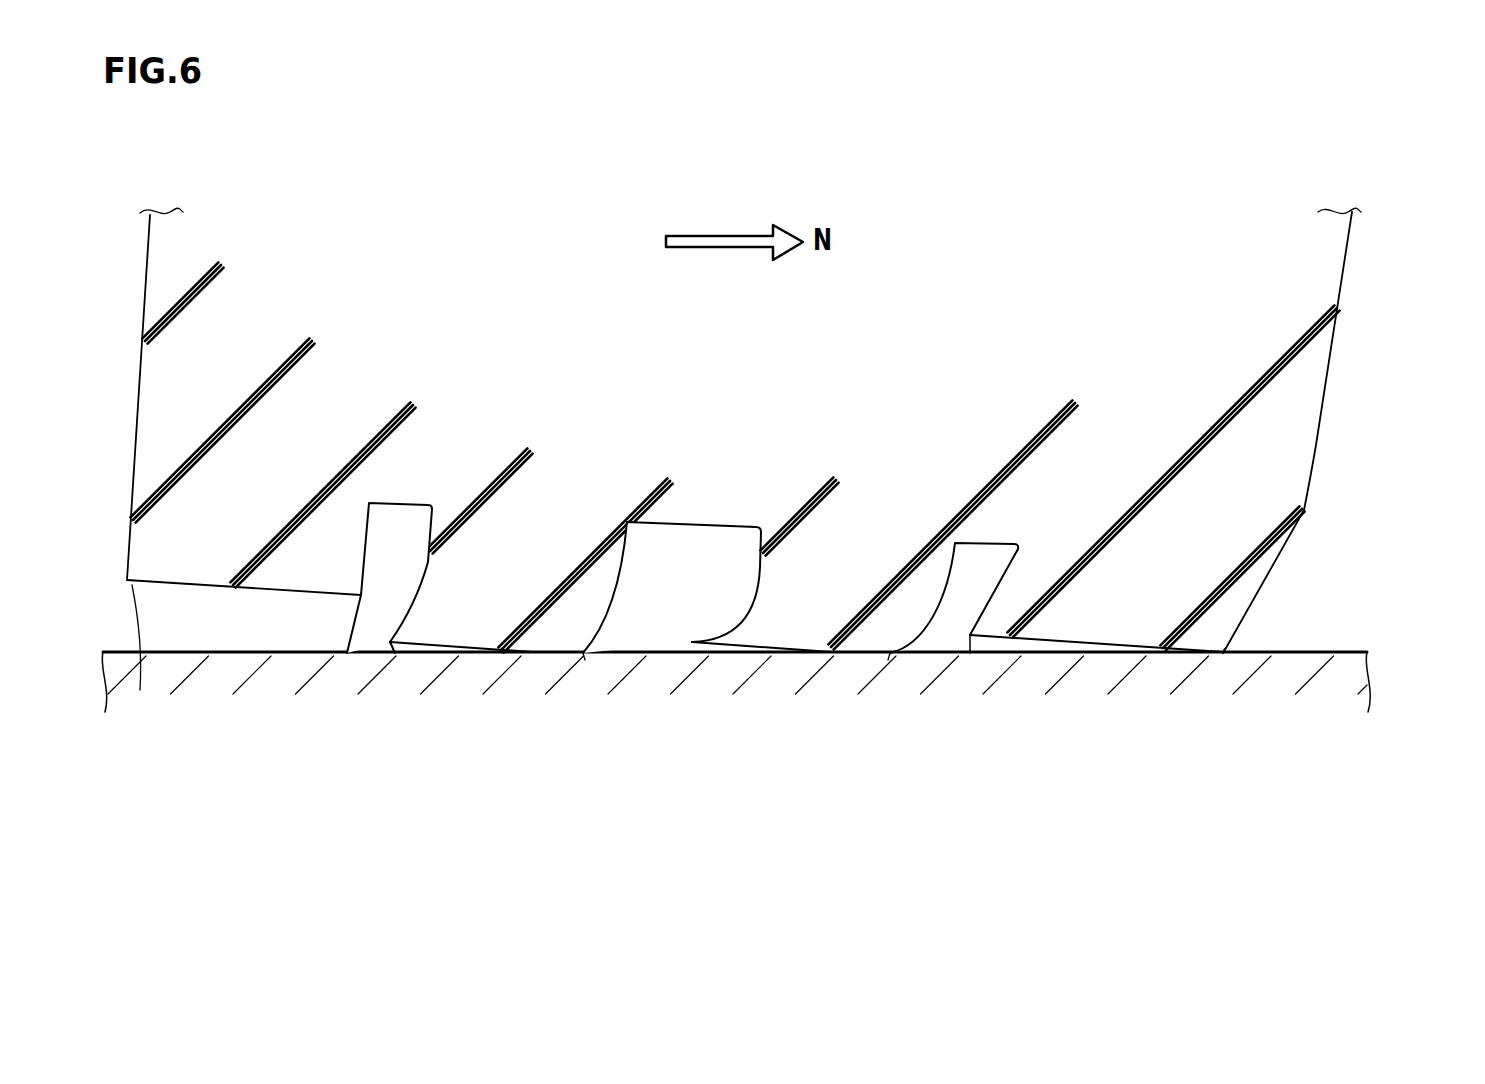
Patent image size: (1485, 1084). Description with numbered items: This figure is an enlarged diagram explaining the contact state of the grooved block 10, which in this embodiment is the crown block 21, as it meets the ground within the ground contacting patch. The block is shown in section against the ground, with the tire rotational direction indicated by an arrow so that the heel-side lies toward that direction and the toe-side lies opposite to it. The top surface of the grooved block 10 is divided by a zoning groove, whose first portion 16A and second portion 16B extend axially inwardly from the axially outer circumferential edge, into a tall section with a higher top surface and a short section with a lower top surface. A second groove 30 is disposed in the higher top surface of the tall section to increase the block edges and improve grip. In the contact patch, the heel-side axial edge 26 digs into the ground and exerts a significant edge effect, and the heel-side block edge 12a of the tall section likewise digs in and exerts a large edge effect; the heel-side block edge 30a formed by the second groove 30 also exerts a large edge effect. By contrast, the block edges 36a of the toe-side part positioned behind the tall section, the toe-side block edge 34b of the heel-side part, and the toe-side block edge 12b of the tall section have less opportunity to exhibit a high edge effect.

The grooved block 10 is at (1352, 330).
The crown block 21 is at (244, 587).
The heel-side block edge of the tall section 12a is at (888, 660).
The toe-side block edge of the tall section 12b is at (395, 653).
The first portion of the zoning groove 16A is at (968, 592).
The second portion of the zoning groove 16B is at (388, 570).
The heel-side axial edge 26 is at (1223, 653).
The second groove 30 is at (668, 585).
The heel-side block edge formed by the second groove 30a is at (585, 660).
The toe-side block edge of the heel-side part 34b is at (970, 653).
The block edge of the toe-side part 36a is at (140, 690).